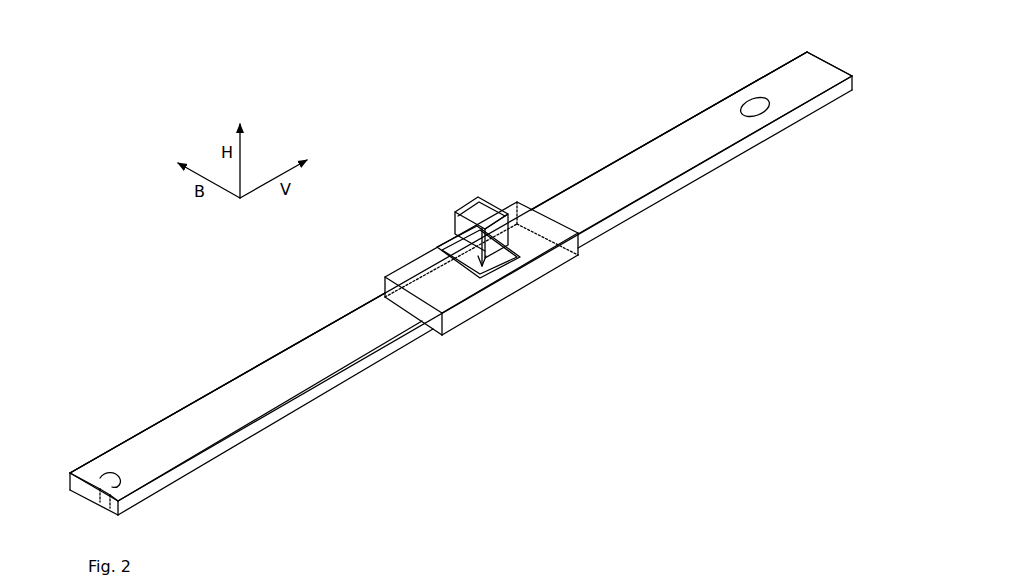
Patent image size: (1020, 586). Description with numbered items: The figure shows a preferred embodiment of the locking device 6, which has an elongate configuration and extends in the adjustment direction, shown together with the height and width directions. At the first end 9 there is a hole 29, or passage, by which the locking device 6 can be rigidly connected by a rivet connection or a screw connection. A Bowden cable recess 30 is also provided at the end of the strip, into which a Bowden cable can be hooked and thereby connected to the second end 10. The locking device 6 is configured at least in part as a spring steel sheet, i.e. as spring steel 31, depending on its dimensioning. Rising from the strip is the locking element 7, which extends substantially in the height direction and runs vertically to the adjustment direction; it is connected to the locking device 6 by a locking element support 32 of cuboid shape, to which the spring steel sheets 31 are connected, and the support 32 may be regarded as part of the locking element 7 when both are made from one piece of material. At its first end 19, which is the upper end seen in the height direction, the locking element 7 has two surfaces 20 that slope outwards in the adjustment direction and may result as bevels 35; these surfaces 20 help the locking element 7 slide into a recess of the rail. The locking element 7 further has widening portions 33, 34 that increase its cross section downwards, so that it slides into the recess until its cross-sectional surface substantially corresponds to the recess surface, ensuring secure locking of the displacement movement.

The locking device 6 is at (696, 284).
The locking element 7 is at (479, 219).
The first end 9 is at (783, 65).
The second end 10 is at (212, 470).
The first end 19 is at (463, 170).
The surfaces 20 is at (466, 208).
The hole 29 is at (765, 113).
The Bowden cable recess 30 is at (88, 515).
The spring steel 31 is at (688, 158).
The locking element support 32 is at (566, 268).
The widening portion 33 is at (448, 256).
The widening portion 34 is at (478, 232).
The bevels 35 is at (487, 197).